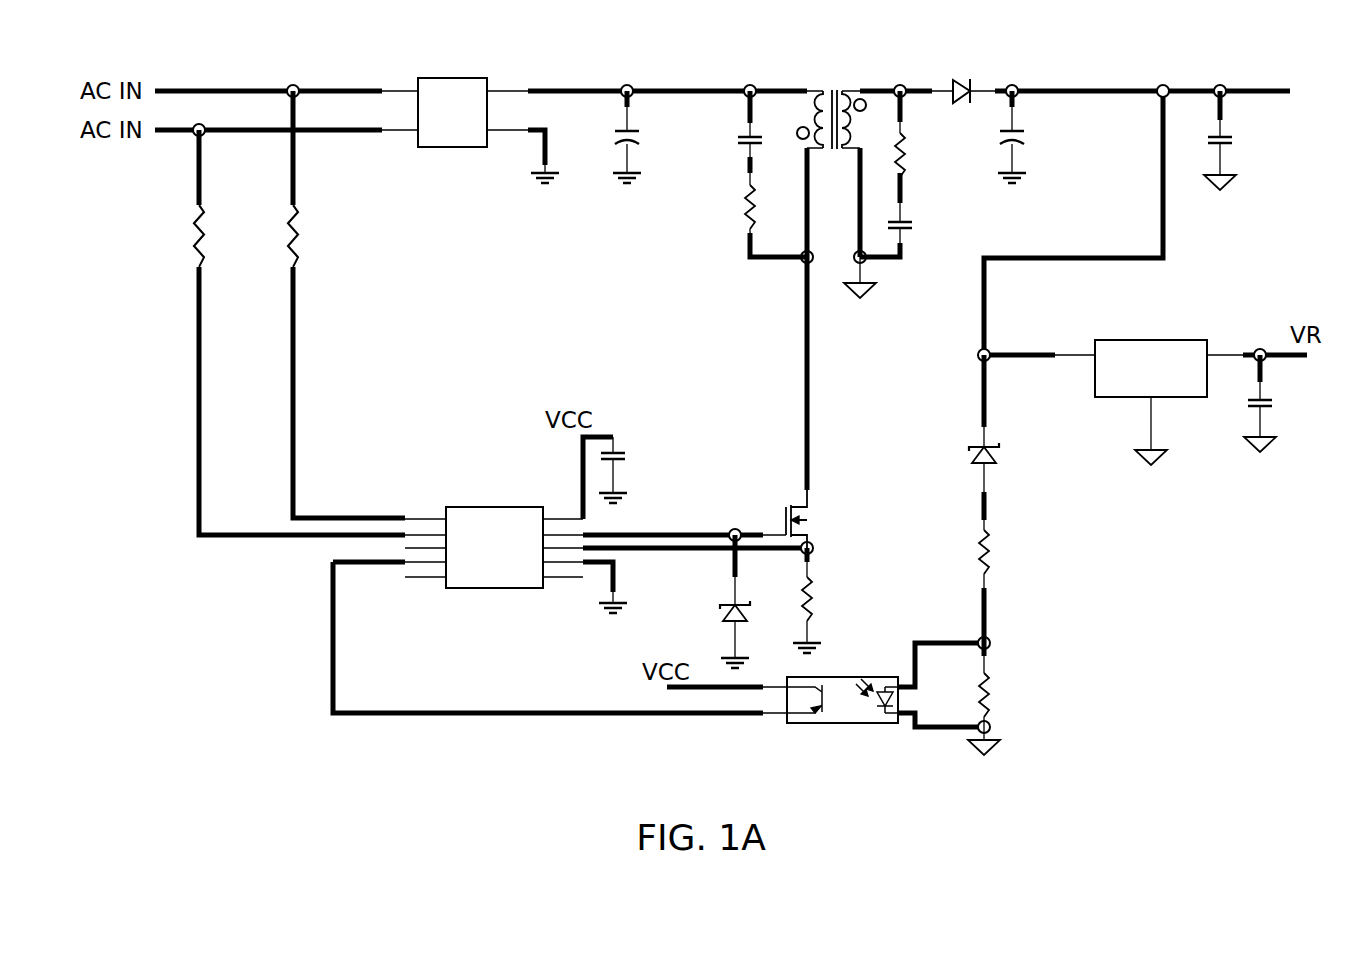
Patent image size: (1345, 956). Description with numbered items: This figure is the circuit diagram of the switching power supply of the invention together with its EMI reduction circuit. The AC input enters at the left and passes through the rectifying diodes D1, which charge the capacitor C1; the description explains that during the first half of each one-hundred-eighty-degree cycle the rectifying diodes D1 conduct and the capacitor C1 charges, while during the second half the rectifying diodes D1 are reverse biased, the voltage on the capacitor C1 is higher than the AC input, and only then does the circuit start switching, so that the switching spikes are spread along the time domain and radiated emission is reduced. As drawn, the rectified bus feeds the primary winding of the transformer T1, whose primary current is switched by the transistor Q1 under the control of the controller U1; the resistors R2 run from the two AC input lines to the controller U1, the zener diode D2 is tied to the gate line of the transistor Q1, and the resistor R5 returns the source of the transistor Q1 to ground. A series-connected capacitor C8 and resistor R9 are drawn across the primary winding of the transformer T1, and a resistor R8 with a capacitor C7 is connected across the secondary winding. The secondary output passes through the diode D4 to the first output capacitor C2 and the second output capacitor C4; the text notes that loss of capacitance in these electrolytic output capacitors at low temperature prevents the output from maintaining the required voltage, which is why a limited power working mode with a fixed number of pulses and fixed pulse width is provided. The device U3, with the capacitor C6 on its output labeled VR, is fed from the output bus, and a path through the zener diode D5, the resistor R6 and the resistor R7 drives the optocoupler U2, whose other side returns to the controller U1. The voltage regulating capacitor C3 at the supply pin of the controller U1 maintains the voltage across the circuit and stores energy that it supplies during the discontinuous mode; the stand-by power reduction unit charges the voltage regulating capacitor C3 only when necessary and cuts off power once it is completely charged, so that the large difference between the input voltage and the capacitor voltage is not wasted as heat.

The resistor R2 is at (299, 313).
The rectifying diodes D1 is at (452, 97).
The capacitor C1 is at (643, 137).
The capacitor C8 is at (732, 124).
The resistor R9 is at (757, 207).
The transformer T1 is at (831, 102).
The resistor R8 is at (921, 147).
The capacitor C7 is at (900, 223).
The diode D4 is at (966, 74).
The first output capacitor C2 is at (1031, 137).
The second output capacitor C4 is at (1239, 140).
The voltage regulator U3 is at (1151, 388).
The capacitor C6 is at (1277, 403).
The zener diode D5 is at (1003, 423).
The resistor R6 is at (1005, 567).
The resistor R7 is at (999, 699).
The optocoupler U2 is at (842, 717).
The MOSFET switch transistor Q1 is at (819, 348).
The resistor R5 is at (822, 600).
The zener diode D2 is at (716, 601).
The control IC U1 is at (494, 532).
The voltage regulating capacitor C3 is at (632, 470).